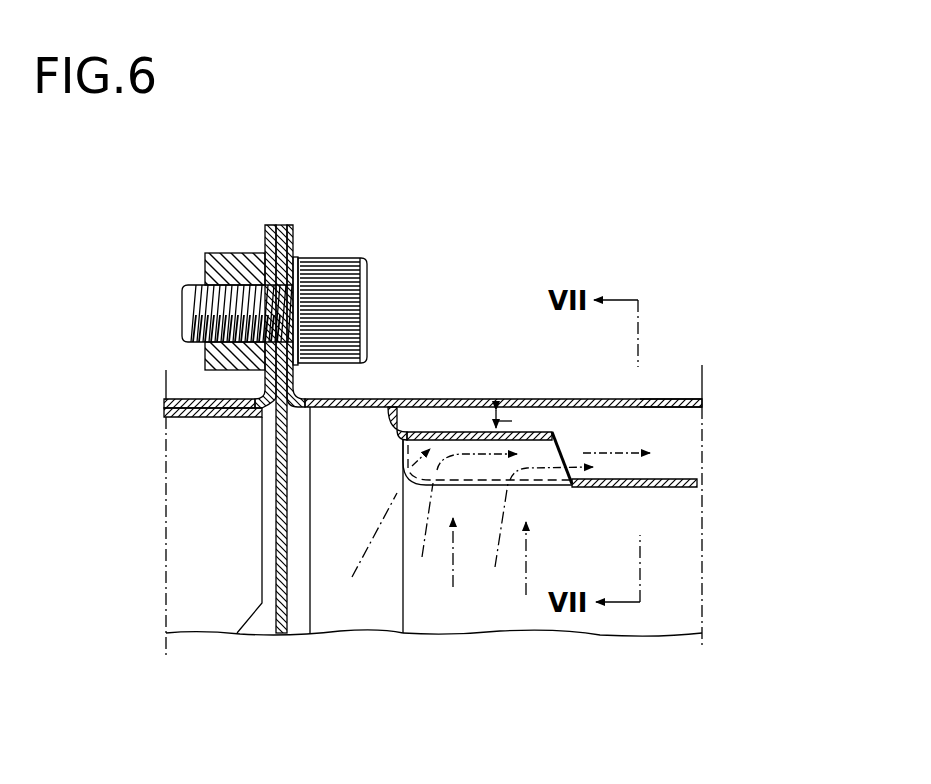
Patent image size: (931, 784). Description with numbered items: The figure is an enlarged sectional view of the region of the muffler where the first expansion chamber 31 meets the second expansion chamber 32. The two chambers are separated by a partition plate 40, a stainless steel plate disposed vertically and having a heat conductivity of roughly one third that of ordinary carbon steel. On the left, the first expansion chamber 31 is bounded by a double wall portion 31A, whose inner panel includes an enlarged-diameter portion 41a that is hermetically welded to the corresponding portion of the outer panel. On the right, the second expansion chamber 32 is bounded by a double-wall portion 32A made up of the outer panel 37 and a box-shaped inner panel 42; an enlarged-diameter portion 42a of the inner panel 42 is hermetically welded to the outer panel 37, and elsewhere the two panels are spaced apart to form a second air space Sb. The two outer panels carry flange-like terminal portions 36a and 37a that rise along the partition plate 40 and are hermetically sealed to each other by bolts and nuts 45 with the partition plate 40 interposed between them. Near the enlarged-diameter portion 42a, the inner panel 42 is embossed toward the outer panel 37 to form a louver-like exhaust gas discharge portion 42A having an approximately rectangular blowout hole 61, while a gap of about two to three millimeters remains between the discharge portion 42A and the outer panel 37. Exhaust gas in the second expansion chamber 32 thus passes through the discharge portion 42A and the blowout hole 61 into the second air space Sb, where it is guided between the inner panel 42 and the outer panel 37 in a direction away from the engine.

The first expansion chamber 31 is at (206, 592).
The double wall portion 31A is at (190, 395).
The second expansion chamber 32 is at (492, 604).
The double-wall portion 32A is at (664, 395).
The flange-like terminal portion 36a is at (265, 240).
The outer panel 37 is at (518, 400).
The flange-like terminal portion 37a is at (293, 240).
The partition plate 40 is at (277, 492).
The enlarged-diameter portion 41a is at (207, 418).
The inner panel 42 is at (647, 480).
The enlarged-diameter portion 42a is at (396, 420).
The exhaust gas discharge portion 42A is at (457, 432).
The bolts and nuts 45 is at (332, 273).
The blowout hole 61 is at (542, 455).
The second air space Sb is at (672, 427).